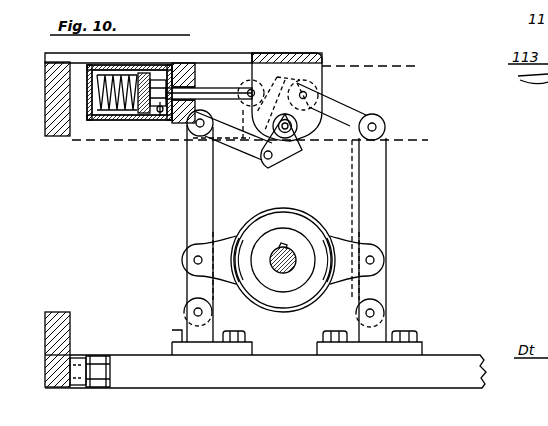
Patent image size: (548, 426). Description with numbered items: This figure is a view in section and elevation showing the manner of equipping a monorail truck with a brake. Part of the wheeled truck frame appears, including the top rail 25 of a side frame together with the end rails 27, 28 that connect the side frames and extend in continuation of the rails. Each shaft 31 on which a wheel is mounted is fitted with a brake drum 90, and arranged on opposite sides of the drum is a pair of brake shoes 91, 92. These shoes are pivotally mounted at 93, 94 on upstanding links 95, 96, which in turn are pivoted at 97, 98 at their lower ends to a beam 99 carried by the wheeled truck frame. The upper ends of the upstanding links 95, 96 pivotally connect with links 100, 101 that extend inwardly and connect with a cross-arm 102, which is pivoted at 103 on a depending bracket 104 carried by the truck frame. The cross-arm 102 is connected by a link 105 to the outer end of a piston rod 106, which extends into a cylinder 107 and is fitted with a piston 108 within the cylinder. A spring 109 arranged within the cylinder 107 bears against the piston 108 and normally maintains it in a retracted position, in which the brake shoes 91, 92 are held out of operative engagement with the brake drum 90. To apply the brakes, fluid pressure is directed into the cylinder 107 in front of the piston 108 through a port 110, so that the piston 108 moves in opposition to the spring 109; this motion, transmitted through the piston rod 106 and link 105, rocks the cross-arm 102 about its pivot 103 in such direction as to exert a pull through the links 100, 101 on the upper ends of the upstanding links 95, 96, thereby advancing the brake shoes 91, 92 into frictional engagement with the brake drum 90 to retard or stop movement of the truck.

The top rail 25 is at (393, 66).
The end rail 27 is at (78, 42).
The end rail 28 is at (62, 313).
The shaft 31 is at (285, 273).
The brake drum 90 is at (283, 226).
The brake shoe 91 is at (233, 226).
The brake shoe 92 is at (332, 226).
The pivot 93 is at (194, 260).
The pivot 94 is at (375, 260).
The upstanding link 95 is at (182, 213).
The upstanding link 96 is at (382, 200).
The pivot 97 is at (195, 311).
The pivot 98 is at (375, 312).
The beam 99 is at (267, 382).
The link 100 is at (237, 150).
The link 101 is at (361, 112).
The cross-arm 102 is at (290, 160).
The pivot 103 is at (295, 135).
The depending bracket 104 is at (322, 77).
The link 105 is at (277, 77).
The piston rod 106 is at (220, 88).
The cylinder 107 is at (157, 64).
The piston 108 is at (141, 118).
The spring 109 is at (117, 110).
The port 110 is at (162, 113).